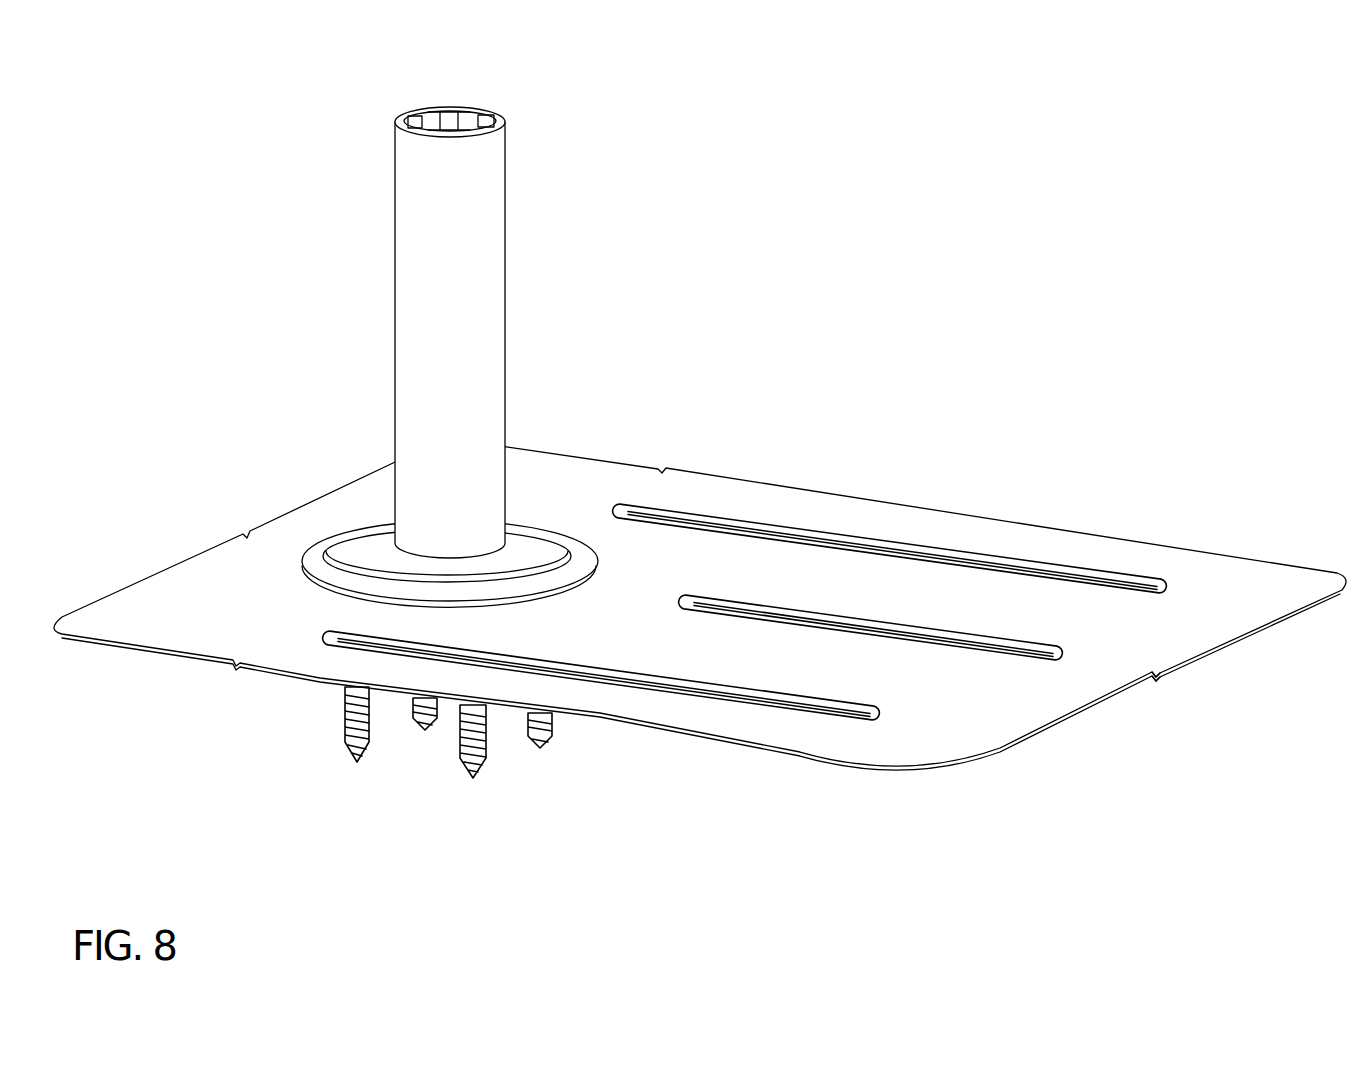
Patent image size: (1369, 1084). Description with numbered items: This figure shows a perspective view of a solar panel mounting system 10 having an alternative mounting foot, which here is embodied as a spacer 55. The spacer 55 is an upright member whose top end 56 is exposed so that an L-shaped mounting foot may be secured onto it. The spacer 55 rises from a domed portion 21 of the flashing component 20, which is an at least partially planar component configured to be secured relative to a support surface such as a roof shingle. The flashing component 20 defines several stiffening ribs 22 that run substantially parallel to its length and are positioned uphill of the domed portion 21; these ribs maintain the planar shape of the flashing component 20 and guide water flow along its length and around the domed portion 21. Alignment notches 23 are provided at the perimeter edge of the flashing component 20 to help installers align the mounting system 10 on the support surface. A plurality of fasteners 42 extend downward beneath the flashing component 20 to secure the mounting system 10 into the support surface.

The mounting system 10 is at (984, 203).
The flashing component 20 is at (960, 732).
The domed portion 21 is at (550, 540).
The stiffening ribs 22 is at (1090, 565).
The alignment notches 23 is at (1160, 678).
The fasteners 42 is at (478, 768).
The spacer 55 is at (475, 222).
The top end 56 is at (468, 108).